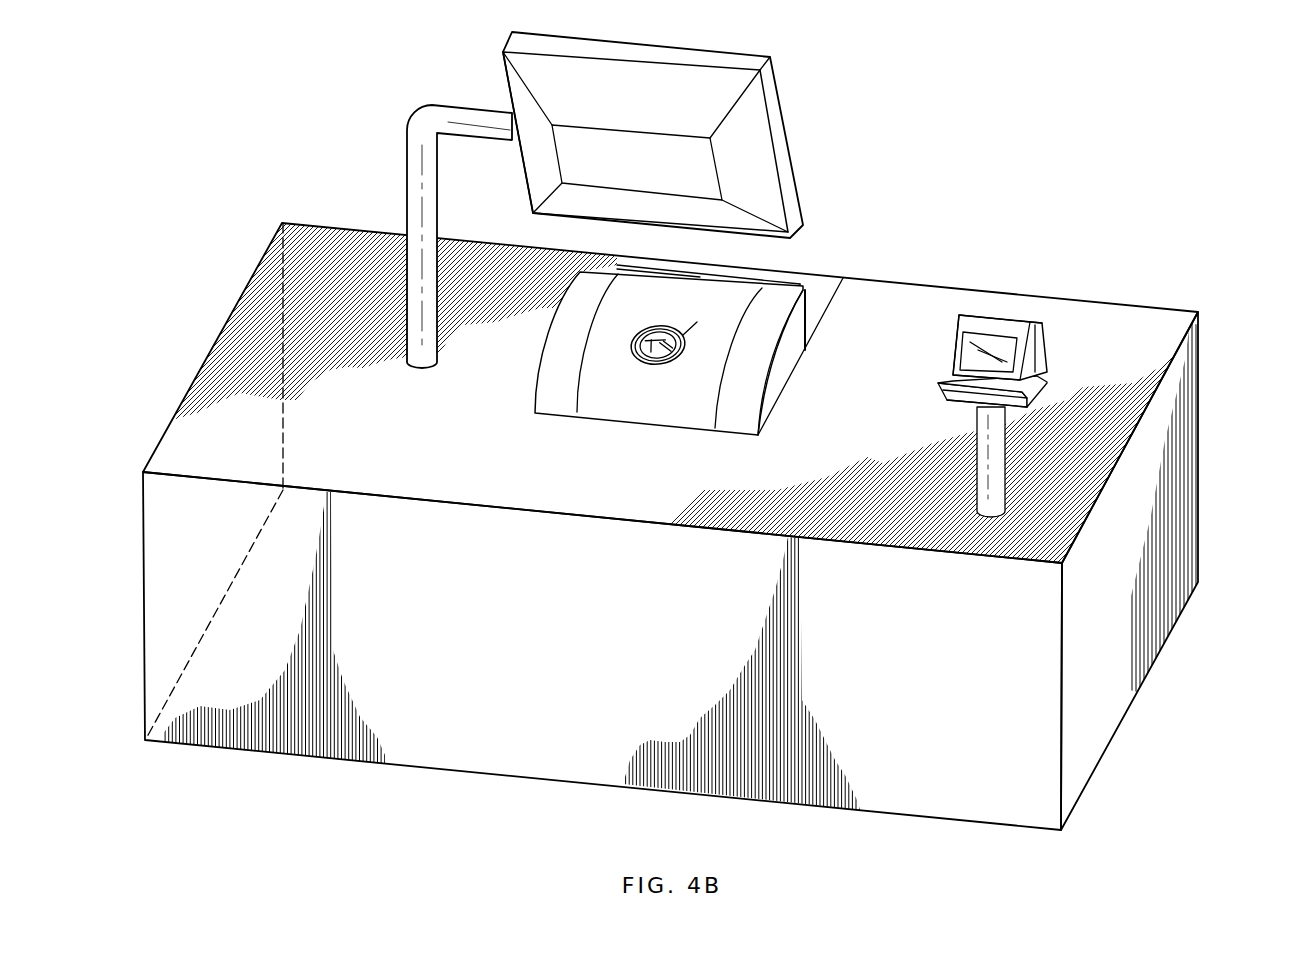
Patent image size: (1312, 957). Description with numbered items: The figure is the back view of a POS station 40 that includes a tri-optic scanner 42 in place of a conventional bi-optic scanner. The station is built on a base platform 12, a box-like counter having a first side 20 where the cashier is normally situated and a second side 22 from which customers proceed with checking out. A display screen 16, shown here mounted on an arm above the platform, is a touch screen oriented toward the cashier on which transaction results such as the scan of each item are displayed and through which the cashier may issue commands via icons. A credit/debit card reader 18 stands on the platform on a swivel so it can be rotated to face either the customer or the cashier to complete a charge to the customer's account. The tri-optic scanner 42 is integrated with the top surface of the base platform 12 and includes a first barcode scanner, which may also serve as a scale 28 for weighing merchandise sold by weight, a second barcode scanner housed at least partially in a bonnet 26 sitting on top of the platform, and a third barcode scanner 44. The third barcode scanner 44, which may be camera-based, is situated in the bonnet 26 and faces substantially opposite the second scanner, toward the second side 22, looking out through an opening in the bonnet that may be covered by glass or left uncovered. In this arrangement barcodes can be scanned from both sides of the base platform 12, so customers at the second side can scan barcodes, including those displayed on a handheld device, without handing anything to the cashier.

The base platform 12 is at (1110, 578).
The display screen 16 is at (780, 110).
The credit/debit card reader 18 is at (1044, 334).
The first side 20 is at (920, 327).
The second side 22 is at (326, 697).
The bonnet 26 is at (777, 387).
The scale 28 is at (818, 303).
The POS station 40 is at (1119, 94).
The tri-optic scanner 42 is at (617, 265).
The third barcode scanner 44 is at (646, 310).